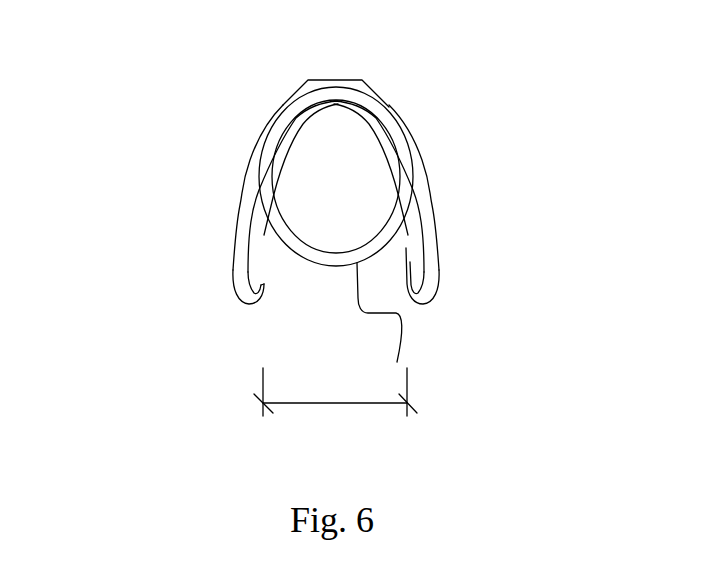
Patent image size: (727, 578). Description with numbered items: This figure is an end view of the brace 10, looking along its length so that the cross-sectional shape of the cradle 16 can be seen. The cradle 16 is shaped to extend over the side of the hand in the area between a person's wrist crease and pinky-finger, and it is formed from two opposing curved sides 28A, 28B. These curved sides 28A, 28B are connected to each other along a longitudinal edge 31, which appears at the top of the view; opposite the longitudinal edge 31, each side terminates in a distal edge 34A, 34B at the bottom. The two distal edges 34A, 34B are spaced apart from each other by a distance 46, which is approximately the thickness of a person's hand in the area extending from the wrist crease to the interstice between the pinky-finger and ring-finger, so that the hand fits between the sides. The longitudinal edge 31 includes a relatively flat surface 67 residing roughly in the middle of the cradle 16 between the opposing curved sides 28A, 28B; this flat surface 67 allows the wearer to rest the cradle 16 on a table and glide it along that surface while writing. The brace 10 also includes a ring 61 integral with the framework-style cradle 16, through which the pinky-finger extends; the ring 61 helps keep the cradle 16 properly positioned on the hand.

The brace 10 is at (325, 201).
The cradle 16 is at (338, 292).
The curved side 28A is at (209, 224).
The curved side 28B is at (447, 245).
The longitudinal edge 31 is at (382, 83).
The distal edge 34A is at (236, 301).
The distal edge 34B is at (422, 318).
The distance 46 is at (310, 403).
The ring 61 is at (379, 328).
The relatively flat surface 67 is at (332, 80).